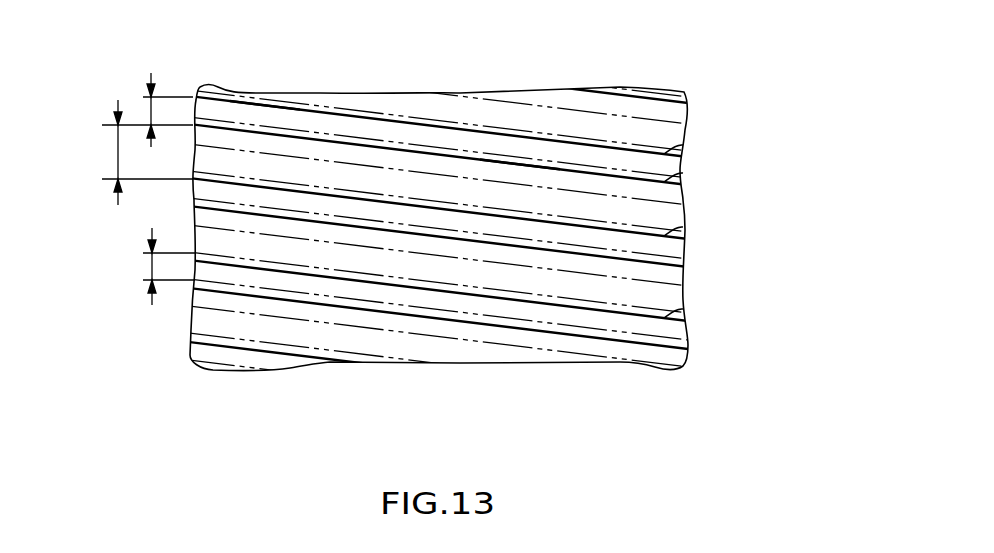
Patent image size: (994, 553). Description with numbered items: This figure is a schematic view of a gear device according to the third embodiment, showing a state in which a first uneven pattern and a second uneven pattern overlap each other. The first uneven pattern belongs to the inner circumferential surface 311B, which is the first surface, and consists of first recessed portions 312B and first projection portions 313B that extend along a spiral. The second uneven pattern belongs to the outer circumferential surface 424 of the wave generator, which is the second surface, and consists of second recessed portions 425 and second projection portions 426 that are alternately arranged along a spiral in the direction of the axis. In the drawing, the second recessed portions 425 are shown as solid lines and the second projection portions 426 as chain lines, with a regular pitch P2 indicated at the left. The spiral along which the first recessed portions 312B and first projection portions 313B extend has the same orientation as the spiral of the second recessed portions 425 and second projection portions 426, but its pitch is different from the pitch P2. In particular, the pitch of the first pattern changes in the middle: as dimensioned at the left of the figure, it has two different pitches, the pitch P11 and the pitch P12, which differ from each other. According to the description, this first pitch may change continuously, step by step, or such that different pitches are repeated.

The inner circumferential surface 311B is at (628, 92).
The first recessed portions 312B is at (682, 147).
The first projection portions 313B is at (265, 110).
The outer circumferential surface 424 is at (511, 237).
The second recessed portions 425 is at (681, 327).
The second projection portions 426 is at (667, 298).
The pitch P11 is at (150, 112).
The pitch P12 is at (114, 152).
The pitch P2 is at (156, 266).